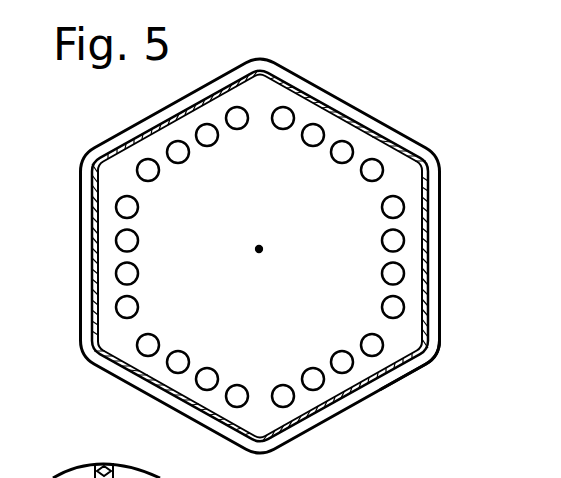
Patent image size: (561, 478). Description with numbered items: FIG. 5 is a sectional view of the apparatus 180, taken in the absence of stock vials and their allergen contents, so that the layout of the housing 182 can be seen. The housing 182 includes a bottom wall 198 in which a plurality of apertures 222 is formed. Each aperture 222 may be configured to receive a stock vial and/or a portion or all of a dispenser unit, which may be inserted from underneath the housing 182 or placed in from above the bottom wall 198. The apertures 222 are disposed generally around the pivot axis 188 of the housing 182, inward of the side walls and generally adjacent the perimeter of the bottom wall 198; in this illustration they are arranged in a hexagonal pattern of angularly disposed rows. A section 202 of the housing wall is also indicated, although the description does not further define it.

The apparatus 180 is at (445, 46).
The housing 182 is at (430, 103).
The bottom wall 198 is at (430, 240).
The shell wall section 202 is at (423, 313).
The pivot axis 188 is at (260, 241).
The apertures 222 is at (207, 379).